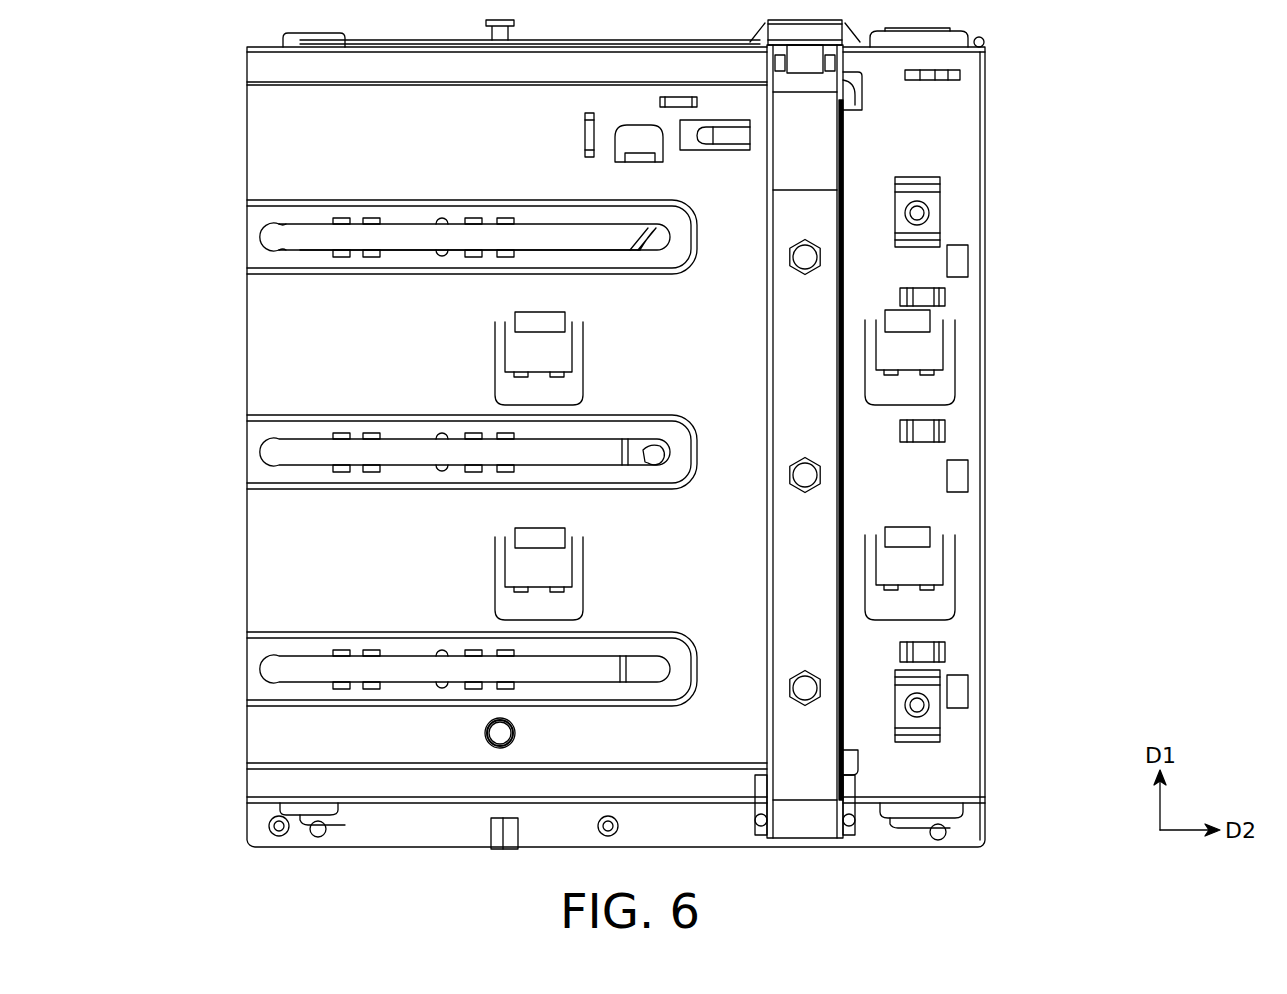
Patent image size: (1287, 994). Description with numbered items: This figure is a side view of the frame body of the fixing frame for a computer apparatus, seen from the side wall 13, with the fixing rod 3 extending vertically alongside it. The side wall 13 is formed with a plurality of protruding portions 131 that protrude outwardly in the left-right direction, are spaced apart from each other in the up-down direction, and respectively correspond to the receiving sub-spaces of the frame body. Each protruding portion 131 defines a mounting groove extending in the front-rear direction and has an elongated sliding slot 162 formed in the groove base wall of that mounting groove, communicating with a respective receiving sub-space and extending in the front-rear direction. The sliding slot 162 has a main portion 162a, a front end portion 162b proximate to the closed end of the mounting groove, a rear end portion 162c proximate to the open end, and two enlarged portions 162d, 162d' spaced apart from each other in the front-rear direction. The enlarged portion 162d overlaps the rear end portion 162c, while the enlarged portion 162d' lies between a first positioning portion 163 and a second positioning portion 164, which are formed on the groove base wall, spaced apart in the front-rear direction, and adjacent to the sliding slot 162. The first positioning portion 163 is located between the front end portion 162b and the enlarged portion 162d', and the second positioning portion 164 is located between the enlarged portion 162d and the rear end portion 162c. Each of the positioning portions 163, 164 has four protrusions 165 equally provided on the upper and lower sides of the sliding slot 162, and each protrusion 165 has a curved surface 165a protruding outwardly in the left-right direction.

The fixing rod 3 is at (823, 494).
The side wall 13 is at (258, 100).
The protruding portion 131 is at (700, 273).
The sliding slot 162 is at (540, 226).
The main portion 162a is at (575, 253).
The front end portion 162b is at (668, 238).
The rear end portion 162c is at (263, 250).
The enlarged portion 162d is at (291, 201).
The enlarged portion 162d' is at (436, 205).
The first positioning portion 163 is at (490, 226).
The second positioning portion 164 is at (356, 226).
The protrusion 165 is at (372, 258).
The curved surface 165a is at (341, 258).